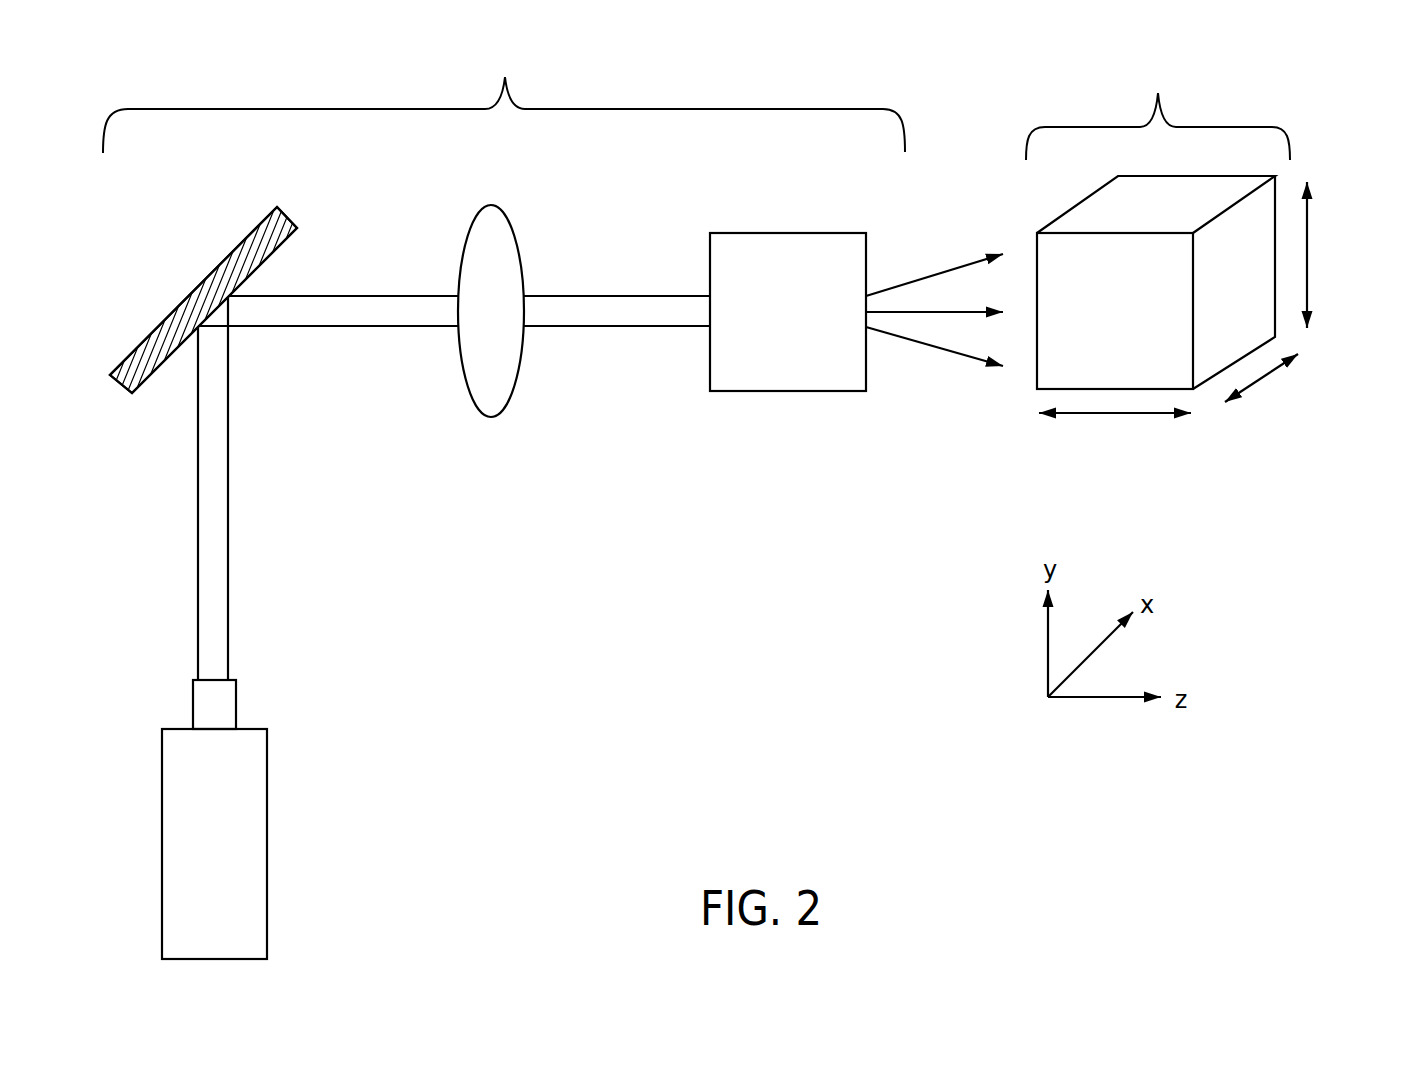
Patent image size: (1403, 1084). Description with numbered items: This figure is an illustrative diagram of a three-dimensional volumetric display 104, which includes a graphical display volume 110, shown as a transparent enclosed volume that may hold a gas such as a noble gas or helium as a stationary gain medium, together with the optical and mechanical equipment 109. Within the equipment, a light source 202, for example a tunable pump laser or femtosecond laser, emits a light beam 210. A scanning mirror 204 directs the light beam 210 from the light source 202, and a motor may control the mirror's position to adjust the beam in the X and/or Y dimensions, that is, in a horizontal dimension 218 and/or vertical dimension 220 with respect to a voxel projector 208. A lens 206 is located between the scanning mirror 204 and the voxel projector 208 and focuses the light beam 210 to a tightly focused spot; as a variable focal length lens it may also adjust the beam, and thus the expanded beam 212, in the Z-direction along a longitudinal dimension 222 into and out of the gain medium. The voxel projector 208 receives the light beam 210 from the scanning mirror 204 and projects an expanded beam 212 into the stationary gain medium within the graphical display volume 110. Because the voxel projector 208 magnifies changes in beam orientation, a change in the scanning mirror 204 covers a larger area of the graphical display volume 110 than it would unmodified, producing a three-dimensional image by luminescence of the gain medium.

The 3D volumetric display 104 is at (810, 571).
The optical and mechanical equipment 109 is at (504, 97).
The graphical display volume 110 is at (1158, 108).
The light source 202 is at (267, 794).
The scanning mirror 204 is at (285, 242).
The lens 206 is at (463, 383).
The voxel projector 208 is at (785, 391).
The light beam 210 is at (602, 327).
The expanded beam 212 is at (932, 345).
The horizontal dimension 218 is at (1263, 377).
The vertical dimension 220 is at (1307, 248).
The longitudinal dimension 222 is at (1112, 413).